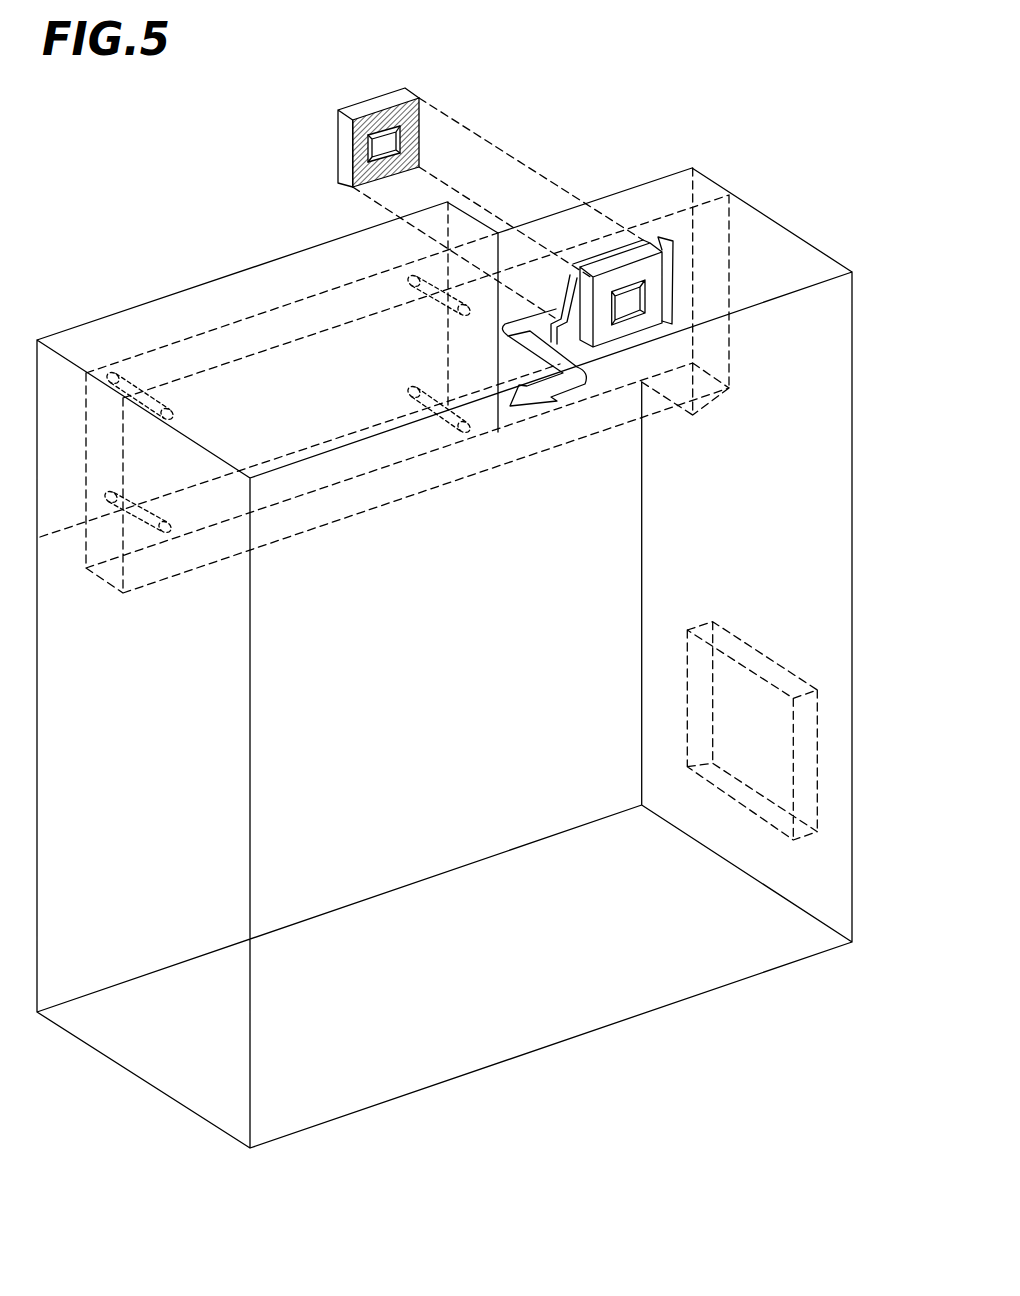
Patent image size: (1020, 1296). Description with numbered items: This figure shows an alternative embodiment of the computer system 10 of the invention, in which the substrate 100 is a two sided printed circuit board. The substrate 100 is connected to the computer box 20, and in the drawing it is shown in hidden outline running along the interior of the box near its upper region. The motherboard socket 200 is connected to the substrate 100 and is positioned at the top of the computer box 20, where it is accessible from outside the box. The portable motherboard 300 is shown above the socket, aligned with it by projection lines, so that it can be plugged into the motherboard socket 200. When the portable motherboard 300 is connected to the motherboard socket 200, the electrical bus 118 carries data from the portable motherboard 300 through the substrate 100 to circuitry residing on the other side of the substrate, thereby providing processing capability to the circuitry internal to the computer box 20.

The electronic device assembly 10 is at (807, 160).
The computer box 20 is at (853, 452).
The substrate 100 is at (98, 418).
The electrical bus 118 is at (503, 336).
The motherboard socket 200 is at (658, 288).
The portable motherboard 300 is at (405, 88).